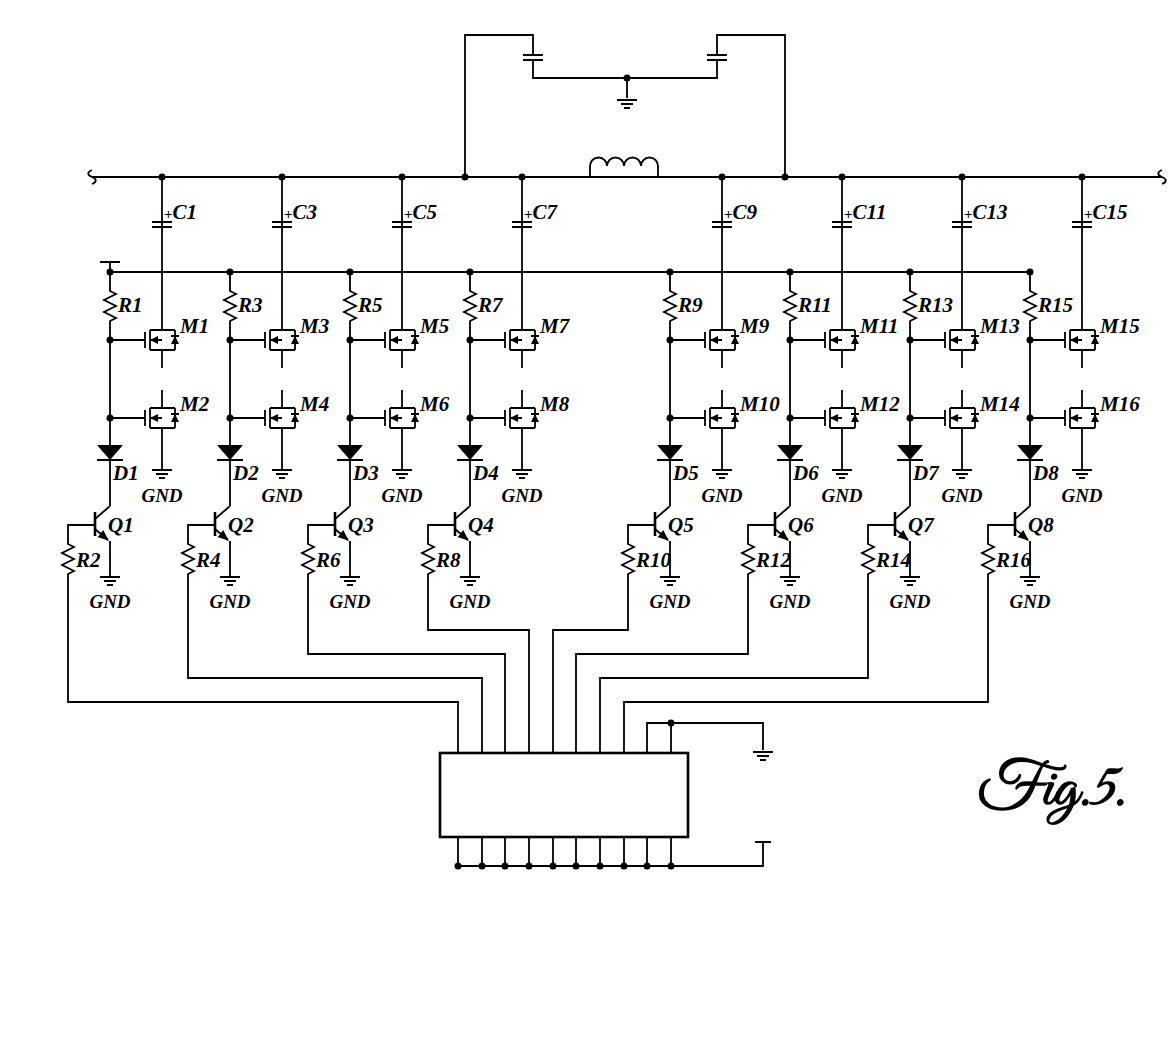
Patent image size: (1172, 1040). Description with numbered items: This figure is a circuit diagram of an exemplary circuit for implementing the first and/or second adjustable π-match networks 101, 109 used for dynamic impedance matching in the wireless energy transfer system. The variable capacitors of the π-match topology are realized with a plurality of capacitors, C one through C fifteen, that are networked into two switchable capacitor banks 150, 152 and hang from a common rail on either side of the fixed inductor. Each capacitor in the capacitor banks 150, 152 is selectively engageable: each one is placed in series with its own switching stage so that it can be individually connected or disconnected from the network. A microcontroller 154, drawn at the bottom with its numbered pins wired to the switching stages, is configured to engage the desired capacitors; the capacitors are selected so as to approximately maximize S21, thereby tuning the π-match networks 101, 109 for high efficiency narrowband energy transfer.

The first adjustable π-match network 101 is at (398, 104).
The second adjustable π-match network 109 is at (625, 108).
The switchable capacitor bank 150 is at (306, 165).
The switchable capacitor bank 152 is at (987, 166).
The microcontroller 154 is at (440, 790).